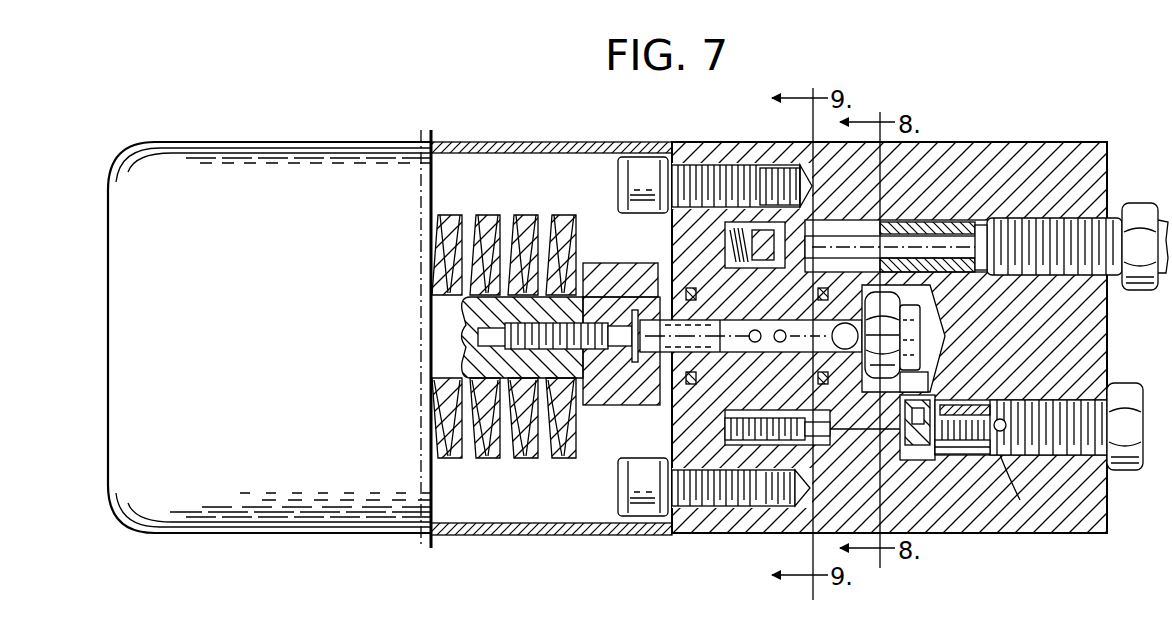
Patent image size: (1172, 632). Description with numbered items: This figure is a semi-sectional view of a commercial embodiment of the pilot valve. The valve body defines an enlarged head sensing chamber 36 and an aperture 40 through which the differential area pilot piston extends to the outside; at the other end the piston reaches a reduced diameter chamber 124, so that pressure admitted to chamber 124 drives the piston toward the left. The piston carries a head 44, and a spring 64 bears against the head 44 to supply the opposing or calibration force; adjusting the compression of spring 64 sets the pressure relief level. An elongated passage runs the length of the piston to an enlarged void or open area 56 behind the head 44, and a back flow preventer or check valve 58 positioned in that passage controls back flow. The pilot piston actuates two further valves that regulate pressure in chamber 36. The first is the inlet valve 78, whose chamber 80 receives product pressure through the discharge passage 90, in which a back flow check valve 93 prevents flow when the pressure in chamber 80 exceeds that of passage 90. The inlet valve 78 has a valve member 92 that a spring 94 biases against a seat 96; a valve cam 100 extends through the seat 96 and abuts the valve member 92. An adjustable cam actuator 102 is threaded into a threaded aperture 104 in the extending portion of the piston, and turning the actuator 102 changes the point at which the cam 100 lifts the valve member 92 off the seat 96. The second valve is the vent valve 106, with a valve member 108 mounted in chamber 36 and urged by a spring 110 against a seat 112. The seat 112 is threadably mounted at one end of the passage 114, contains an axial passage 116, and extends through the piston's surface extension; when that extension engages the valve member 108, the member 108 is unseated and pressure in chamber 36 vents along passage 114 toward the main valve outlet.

The head sensing chamber 36 is at (712, 522).
The aperture 40 is at (690, 426).
The head 44 is at (626, 296).
The open area 56 is at (612, 395).
The check valve 58 is at (922, 320).
The spring 64 is at (525, 215).
The inlet valve 78 is at (945, 455).
The chamber 80 is at (940, 402).
The discharge passage 90 is at (1103, 496).
The valve member 92 is at (976, 407).
The back flow check valve 93 is at (1005, 433).
The spring 94 is at (1068, 402).
The seat 96 is at (1020, 500).
The valve cam 100 is at (916, 468).
The adjustable cam actuator 102 is at (790, 456).
The threaded aperture 104 is at (728, 456).
The vent valve 106 is at (906, 216).
The valve member 108 is at (735, 242).
The spring 110 is at (742, 146).
The seat 112 is at (770, 147).
The passage 114 is at (1038, 216).
The axial passage 116 is at (981, 228).
The reduced diameter chamber 124 is at (918, 382).